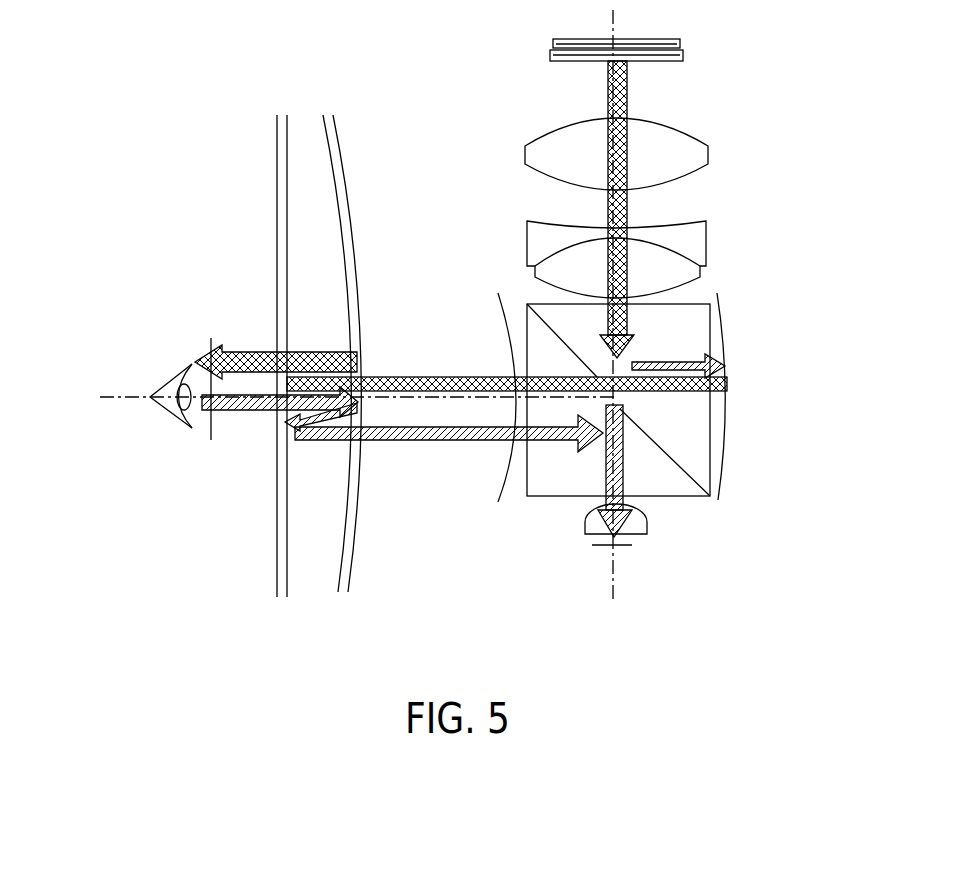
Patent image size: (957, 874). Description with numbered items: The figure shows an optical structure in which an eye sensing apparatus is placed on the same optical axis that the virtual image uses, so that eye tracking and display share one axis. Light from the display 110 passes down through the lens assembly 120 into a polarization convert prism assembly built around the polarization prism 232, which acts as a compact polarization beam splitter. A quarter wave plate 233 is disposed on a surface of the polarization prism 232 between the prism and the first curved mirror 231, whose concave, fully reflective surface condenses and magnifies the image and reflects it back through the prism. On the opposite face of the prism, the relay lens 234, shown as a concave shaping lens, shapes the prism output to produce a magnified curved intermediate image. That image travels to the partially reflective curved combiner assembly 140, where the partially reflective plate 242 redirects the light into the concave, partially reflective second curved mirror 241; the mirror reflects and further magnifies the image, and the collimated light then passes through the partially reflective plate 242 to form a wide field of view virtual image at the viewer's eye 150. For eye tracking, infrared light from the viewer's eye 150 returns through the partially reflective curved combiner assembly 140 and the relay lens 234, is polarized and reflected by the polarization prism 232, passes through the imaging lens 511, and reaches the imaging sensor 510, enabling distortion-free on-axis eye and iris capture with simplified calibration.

The display 110 is at (685, 58).
The lens assembly 120 is at (736, 108).
The partially reflective curved combiner assembly 140 is at (309, 386).
The viewer's eye 150 is at (176, 413).
The first curved mirror 231 is at (720, 306).
The polarization prism 232 is at (683, 348).
The quarter wave plate 233 is at (718, 487).
The relay lens 234 is at (508, 342).
The second curved mirror 241 is at (352, 237).
The partially reflective plate 242 is at (275, 184).
The imaging sensor 510 is at (592, 548).
The imaging lens 511 is at (638, 548).